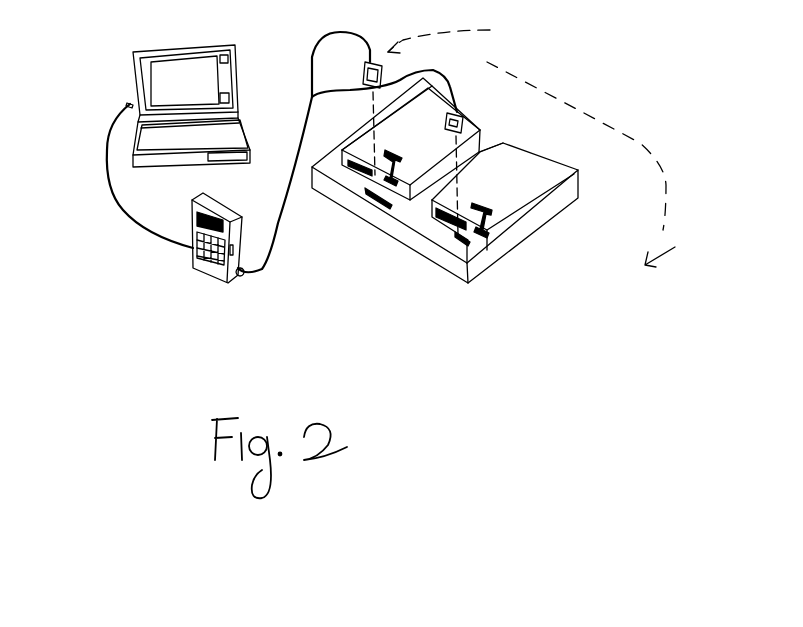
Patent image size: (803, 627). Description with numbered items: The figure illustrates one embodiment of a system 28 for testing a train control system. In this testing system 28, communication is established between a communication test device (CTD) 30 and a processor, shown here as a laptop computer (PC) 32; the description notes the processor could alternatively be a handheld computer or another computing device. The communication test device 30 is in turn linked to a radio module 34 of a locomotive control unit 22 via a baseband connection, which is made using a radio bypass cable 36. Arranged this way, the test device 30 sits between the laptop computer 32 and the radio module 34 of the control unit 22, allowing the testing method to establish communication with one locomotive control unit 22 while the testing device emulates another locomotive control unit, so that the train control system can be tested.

The locomotive control unit 22 is at (635, 140).
The system for testing train control system 28 is at (488, 32).
The communication test device 30 is at (193, 257).
The laptop computer 32 is at (133, 80).
The radio module 34 is at (563, 213).
The radio bypass cable 36 is at (310, 93).